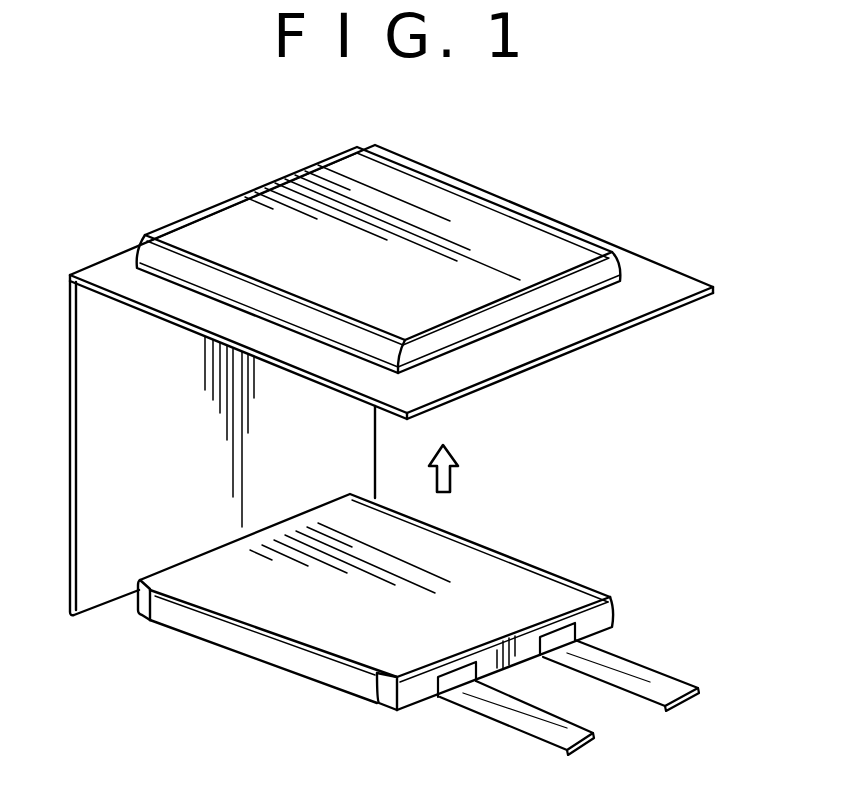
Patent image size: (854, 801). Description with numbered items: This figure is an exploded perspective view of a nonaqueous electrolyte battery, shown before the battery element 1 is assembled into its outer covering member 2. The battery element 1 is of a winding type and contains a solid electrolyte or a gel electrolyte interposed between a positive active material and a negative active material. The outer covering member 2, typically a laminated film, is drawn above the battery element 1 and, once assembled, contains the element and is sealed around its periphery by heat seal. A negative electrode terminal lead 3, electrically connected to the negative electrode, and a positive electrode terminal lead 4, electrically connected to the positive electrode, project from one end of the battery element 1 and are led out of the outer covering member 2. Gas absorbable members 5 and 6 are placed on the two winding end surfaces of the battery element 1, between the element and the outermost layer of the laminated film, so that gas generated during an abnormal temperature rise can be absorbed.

The battery element 1 is at (530, 562).
The outer covering member 2 is at (657, 260).
The negative electrode terminal lead 3 is at (597, 727).
The positive electrode terminal lead 4 is at (678, 685).
The gas absorbable member 5 is at (392, 712).
The gas absorbable member 6 is at (136, 612).